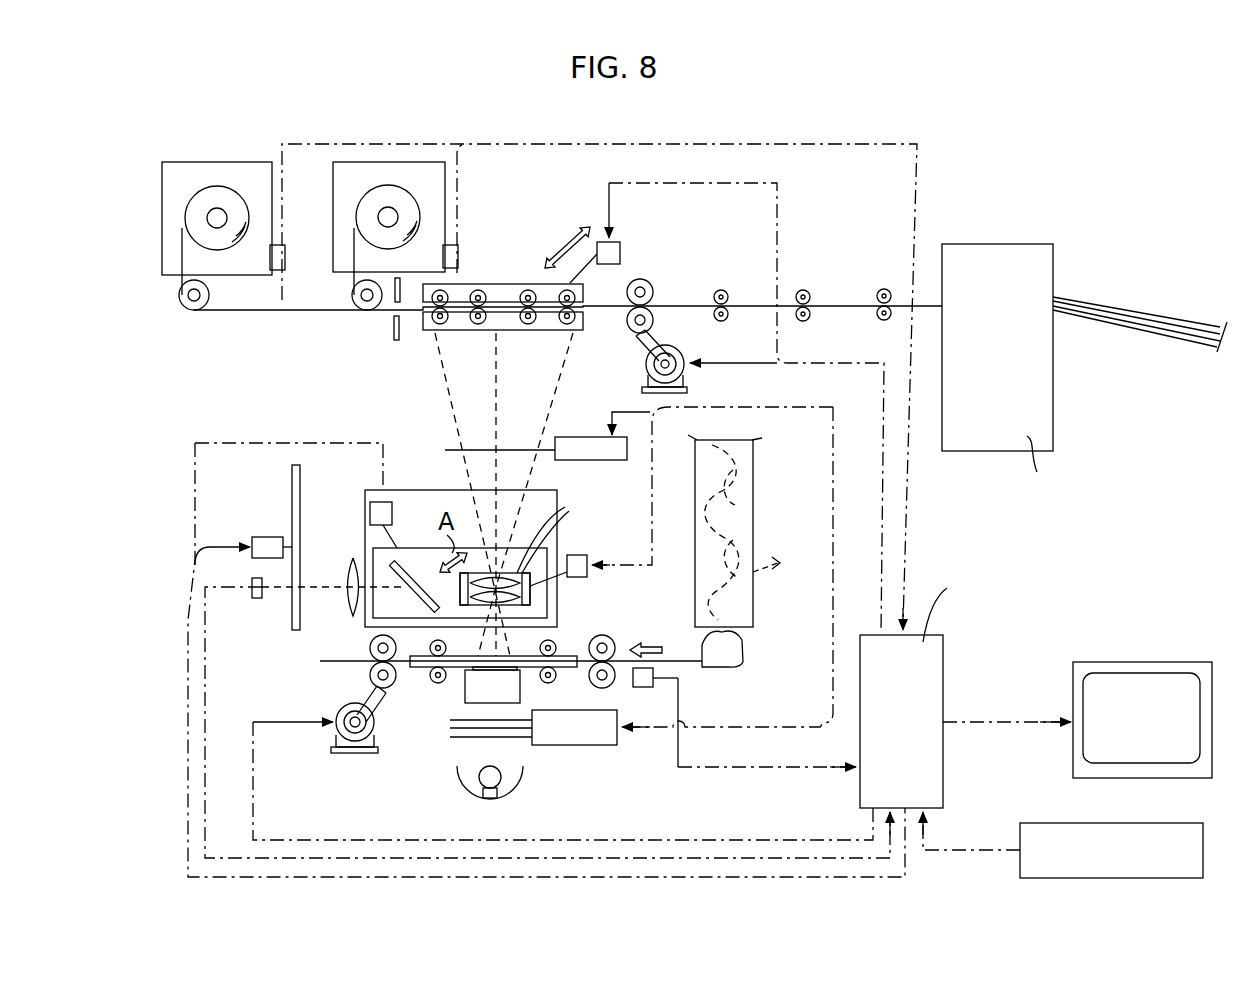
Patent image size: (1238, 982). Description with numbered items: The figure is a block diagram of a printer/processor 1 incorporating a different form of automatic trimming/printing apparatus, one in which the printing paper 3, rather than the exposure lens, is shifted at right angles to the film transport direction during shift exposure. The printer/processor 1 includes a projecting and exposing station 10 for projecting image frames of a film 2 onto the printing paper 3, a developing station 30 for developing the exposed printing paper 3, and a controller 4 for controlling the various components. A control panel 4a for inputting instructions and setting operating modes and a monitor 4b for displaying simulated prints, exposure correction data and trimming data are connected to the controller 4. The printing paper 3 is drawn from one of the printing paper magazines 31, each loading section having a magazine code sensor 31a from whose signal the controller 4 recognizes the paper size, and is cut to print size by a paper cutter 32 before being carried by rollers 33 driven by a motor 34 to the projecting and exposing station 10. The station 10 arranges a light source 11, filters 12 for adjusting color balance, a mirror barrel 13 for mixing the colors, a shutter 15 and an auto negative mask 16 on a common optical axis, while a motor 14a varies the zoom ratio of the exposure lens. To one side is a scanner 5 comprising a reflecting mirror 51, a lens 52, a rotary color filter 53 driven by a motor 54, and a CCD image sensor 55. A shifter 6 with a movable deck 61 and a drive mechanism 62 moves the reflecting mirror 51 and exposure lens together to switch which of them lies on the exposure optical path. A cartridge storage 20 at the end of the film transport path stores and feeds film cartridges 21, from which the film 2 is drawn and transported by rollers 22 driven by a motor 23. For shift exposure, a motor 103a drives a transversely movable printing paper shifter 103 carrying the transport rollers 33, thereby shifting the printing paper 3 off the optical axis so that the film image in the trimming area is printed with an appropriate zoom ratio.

The printer/processor 1 is at (226, 408).
The film 2 is at (410, 668).
The printing paper 3 is at (262, 312).
The controller 4 is at (943, 668).
The control panel 4a is at (1050, 823).
The monitor 4b is at (1073, 735).
The scanner 5 is at (343, 426).
The shifter 6 is at (365, 506).
The projecting and exposing station 10 is at (405, 463).
The light source 11 is at (482, 779).
The filters 12 is at (563, 745).
The mirror barrel 13 is at (520, 690).
The motor 14a is at (628, 596).
The shutter 15 is at (580, 437).
The auto negative mask 16 is at (455, 670).
The cartridge storage 20 is at (761, 496).
The film cartridge 21 is at (758, 680).
The rollers 22 is at (598, 637).
The motor 23 is at (337, 727).
The developing station 30 is at (996, 244).
The printing paper magazine 31 is at (162, 200).
The magazine code sensor 31a is at (285, 257).
The paper cutter 32 is at (392, 331).
The rollers 33 is at (653, 288).
The motor 34 is at (686, 356).
The reflecting mirror 51 is at (377, 617).
The lens 52 is at (353, 561).
The rotary color filter 53 is at (292, 478).
The motor 54 is at (268, 537).
The CCD image sensor 55 is at (258, 598).
The movable deck 61 is at (415, 548).
The drive mechanism 62 is at (373, 502).
The printing paper shifter 103 is at (512, 283).
The motor 103a is at (620, 251).